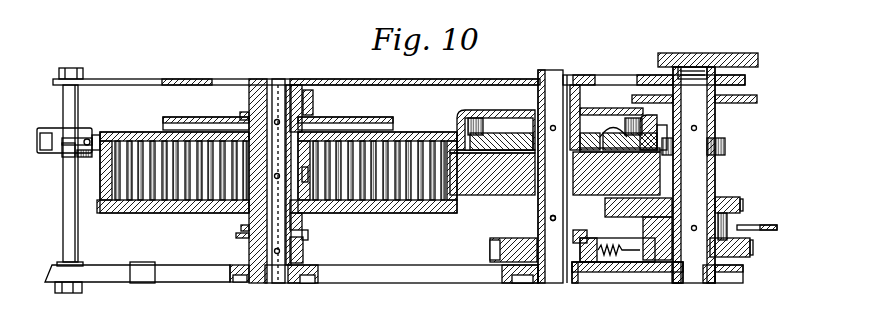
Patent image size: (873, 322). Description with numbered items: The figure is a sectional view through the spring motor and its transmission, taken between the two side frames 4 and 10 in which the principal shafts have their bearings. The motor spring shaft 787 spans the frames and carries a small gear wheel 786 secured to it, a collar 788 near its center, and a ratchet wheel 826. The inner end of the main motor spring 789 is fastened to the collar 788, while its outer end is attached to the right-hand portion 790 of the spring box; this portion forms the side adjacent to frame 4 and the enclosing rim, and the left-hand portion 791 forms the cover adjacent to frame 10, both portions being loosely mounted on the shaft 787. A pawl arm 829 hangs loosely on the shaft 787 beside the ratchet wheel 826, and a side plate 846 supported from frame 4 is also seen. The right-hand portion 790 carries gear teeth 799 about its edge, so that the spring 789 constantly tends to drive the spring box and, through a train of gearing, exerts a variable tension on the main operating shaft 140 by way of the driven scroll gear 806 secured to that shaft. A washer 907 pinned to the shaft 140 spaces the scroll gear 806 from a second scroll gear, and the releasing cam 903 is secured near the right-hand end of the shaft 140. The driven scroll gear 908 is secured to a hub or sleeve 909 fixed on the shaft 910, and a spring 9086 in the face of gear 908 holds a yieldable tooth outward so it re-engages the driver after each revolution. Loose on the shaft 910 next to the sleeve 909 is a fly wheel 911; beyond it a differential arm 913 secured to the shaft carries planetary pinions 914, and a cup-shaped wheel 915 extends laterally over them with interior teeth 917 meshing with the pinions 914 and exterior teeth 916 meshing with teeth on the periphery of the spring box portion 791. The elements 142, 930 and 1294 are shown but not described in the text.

The frame 10 is at (436, 88).
The frame 4 is at (406, 283).
The adjusting knob 142 is at (740, 51).
The main operating shaft 140 is at (700, 171).
The releasing cam 903 is at (730, 102).
The nut 930 is at (716, 152).
The scroll gear 806 is at (740, 205).
The plate 1294 is at (742, 229).
The ratchet wheel 826 is at (192, 120).
The pawl arm 829 is at (243, 113).
The side plate 846 is at (241, 228).
The motor spring shaft 787 is at (277, 285).
The small gear wheel 786 is at (305, 250).
The collar 788 is at (312, 175).
The motor spring 789 is at (375, 200).
The right-hand portion of spring box 790 is at (365, 214).
The left-hand portion of spring box 791 is at (402, 134).
The gear teeth 799 is at (455, 210).
The fly wheel 911 is at (522, 195).
The hub or sleeve 909 is at (551, 218).
The scroll gear 908 is at (525, 265).
The shaft 910 is at (553, 284).
The differential arm 913 is at (580, 125).
The planetary pinions 914 is at (520, 133).
The cup-shaped wheel 915 is at (475, 118).
The exterior gear teeth 916 is at (648, 130).
The interior gear teeth 917 is at (632, 171).
The washer 907 is at (668, 230).
The spring 9086 is at (630, 248).